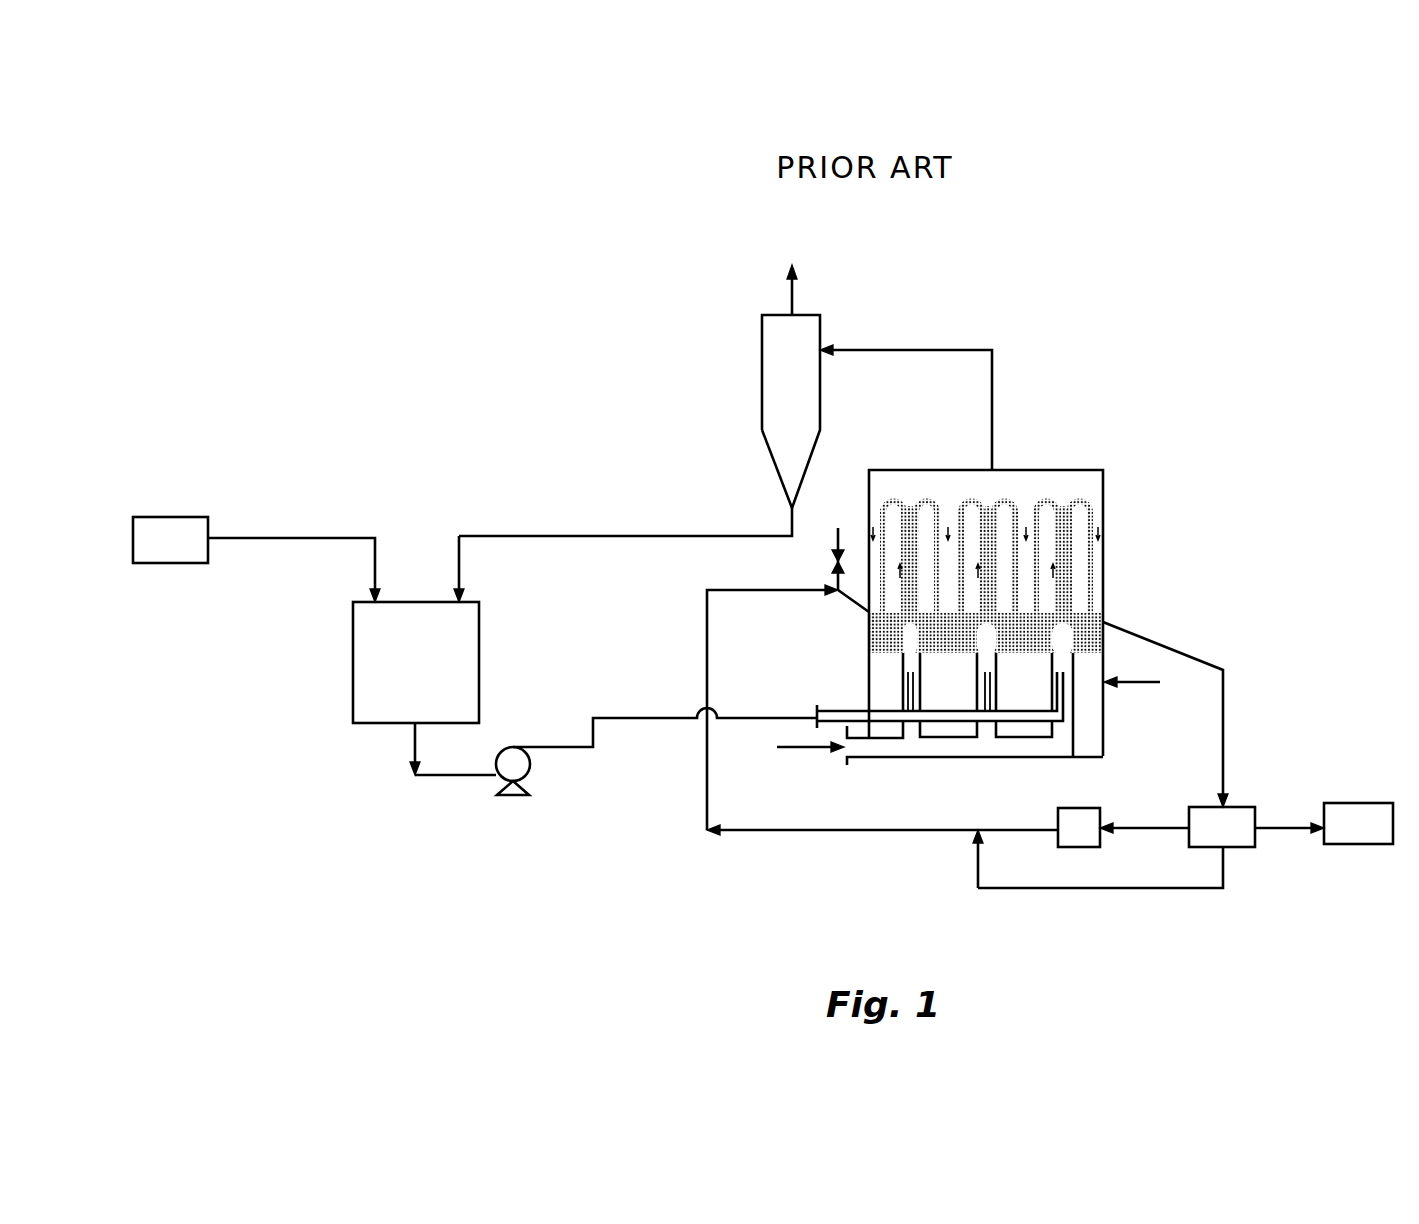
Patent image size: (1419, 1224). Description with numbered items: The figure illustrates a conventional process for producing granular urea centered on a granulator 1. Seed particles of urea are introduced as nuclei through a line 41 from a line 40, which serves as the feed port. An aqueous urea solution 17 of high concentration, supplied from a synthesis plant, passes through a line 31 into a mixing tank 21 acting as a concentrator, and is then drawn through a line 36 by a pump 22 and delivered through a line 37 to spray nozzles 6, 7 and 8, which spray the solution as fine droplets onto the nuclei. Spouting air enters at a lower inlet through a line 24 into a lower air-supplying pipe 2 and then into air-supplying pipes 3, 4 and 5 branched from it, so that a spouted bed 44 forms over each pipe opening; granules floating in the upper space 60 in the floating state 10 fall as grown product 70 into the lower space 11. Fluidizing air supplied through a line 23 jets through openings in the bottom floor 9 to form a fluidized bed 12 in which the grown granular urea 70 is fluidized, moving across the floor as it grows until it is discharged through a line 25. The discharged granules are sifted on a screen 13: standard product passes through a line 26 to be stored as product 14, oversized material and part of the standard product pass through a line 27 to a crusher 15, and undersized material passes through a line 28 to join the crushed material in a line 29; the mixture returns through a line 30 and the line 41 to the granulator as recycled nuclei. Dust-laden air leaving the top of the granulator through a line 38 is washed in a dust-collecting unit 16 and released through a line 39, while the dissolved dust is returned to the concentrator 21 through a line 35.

The granulator 1 is at (1103, 503).
The lower air-supplying pipe 2 is at (903, 760).
The air-supplying pipe 3 is at (922, 698).
The air-supplying pipe 4 is at (999, 697).
The air-supplying pipe 5 is at (1073, 710).
The spray nozzle 6 is at (915, 672).
The spray nozzle 7 is at (993, 672).
The spray nozzle 8 is at (1063, 672).
The bottom floor 9 is at (887, 656).
The floating state 10 is at (920, 490).
The lower space 11 is at (950, 656).
The fluidized bed 12 is at (856, 615).
The screen 13 is at (1245, 807).
The product 14 is at (1368, 803).
The crusher 15 is at (1080, 808).
The dust-collecting unit 16 is at (820, 326).
The aqueous urea solution 17 is at (170, 565).
The mixing tank 21 is at (353, 648).
The pump 22 is at (513, 797).
The line 23 is at (1143, 706).
The line 24 is at (802, 750).
The line 25 is at (1193, 664).
The line 26 is at (1286, 832).
The line 27 is at (1155, 827).
The line 28 is at (1120, 890).
The line 29 is at (1002, 828).
The line 30 is at (830, 832).
The line 31 is at (310, 536).
The line 35 is at (530, 535).
The line 36 is at (447, 778).
The line 37 is at (648, 717).
The line 38 is at (994, 414).
The line 39 is at (790, 297).
The line 40 is at (838, 540).
The line 41 is at (868, 610).
The spouted bed 44 is at (1060, 648).
The space 60 is at (1000, 484).
The grown product 70 is at (938, 626).